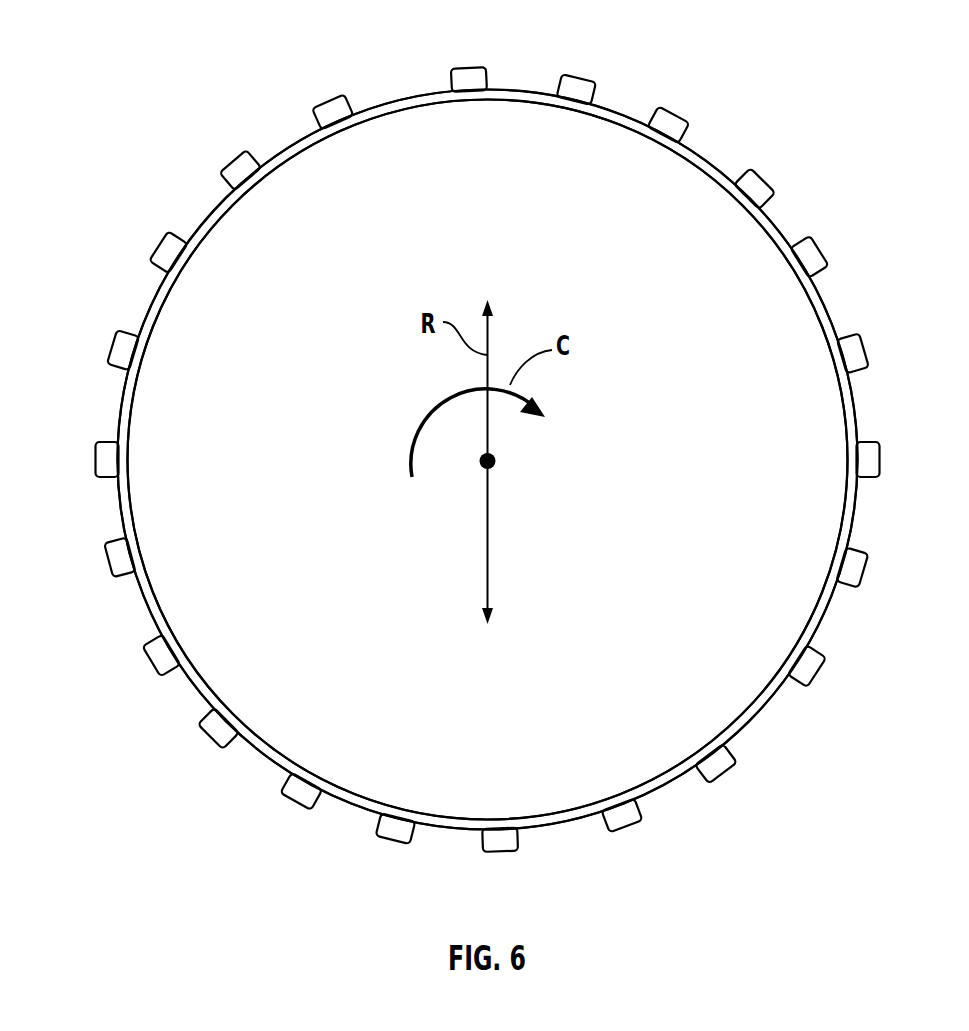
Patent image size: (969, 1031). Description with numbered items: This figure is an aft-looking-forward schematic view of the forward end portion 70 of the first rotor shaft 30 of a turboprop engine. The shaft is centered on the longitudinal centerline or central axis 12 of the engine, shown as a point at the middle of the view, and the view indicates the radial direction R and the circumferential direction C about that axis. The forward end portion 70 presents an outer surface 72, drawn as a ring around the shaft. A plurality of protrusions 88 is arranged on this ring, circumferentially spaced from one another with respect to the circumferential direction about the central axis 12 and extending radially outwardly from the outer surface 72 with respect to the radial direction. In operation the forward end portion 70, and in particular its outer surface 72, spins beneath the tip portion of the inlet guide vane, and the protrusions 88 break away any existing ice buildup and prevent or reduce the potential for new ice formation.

The central axis 12 is at (496, 460).
The first rotor shaft 30 is at (527, 101).
The forward end portion 70 is at (618, 110).
The outer surface 72 is at (386, 105).
The protrusions 88 is at (324, 103).